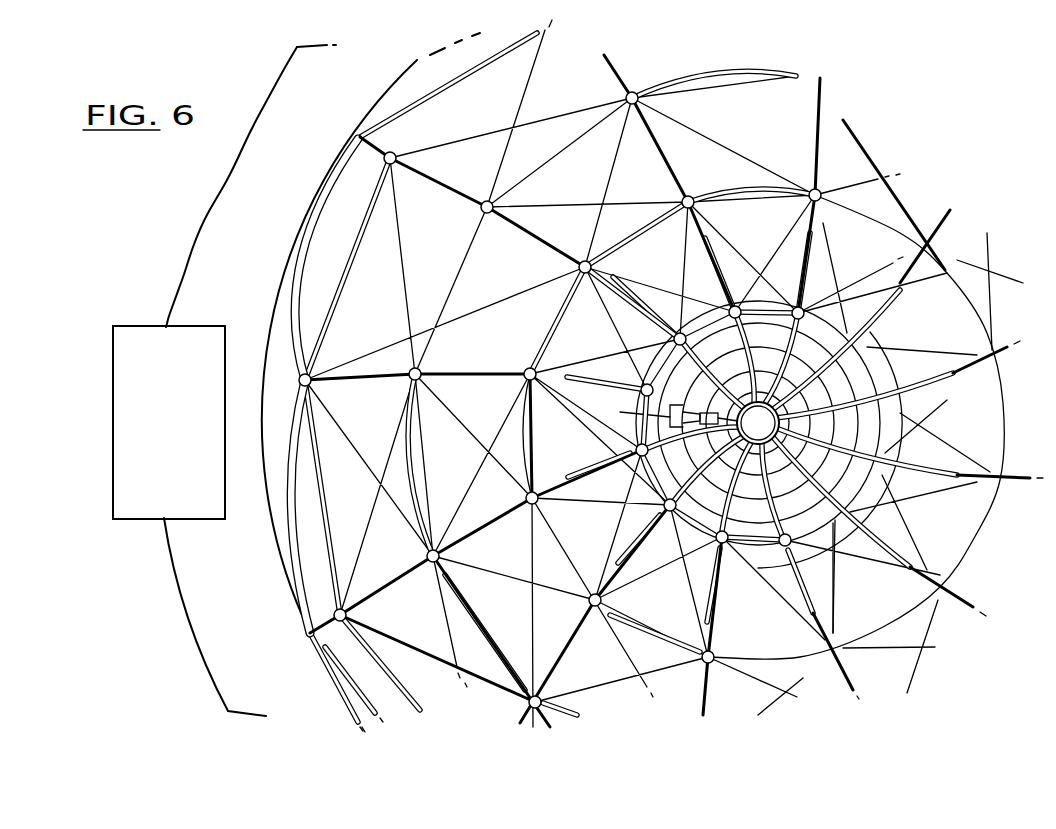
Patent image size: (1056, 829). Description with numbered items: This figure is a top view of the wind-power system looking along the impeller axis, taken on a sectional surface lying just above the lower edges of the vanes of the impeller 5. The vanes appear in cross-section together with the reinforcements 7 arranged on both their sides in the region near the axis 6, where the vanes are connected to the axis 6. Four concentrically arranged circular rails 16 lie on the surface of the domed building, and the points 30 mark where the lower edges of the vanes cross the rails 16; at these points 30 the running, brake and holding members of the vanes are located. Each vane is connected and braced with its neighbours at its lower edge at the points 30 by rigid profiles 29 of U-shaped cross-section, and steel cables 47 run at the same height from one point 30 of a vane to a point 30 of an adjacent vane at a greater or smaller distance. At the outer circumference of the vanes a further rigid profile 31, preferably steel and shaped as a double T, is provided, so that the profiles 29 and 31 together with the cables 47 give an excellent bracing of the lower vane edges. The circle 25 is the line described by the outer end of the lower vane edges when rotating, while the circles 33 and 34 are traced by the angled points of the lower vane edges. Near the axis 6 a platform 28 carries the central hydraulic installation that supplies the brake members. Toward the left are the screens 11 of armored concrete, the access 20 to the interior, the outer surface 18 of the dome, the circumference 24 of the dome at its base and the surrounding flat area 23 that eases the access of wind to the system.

The impeller 5 is at (822, 148).
The axis 6 is at (766, 439).
The reinforcements 7 is at (613, 563).
The screens 11 is at (124, 349).
The rails 16 is at (978, 535).
The outer surface 18 is at (204, 571).
The access 20 is at (111, 392).
The flat area 23 is at (83, 478).
The circumference of the dome 24 is at (166, 542).
The circle 25 is at (276, 280).
The platform 28 is at (605, 422).
The rigid profiles 29 is at (373, 230).
The points 30 is at (383, 158).
The rigid profile 31 is at (306, 266).
The circle 33 is at (845, 525).
The circle 34 is at (918, 433).
The tension cables 47 is at (521, 125).